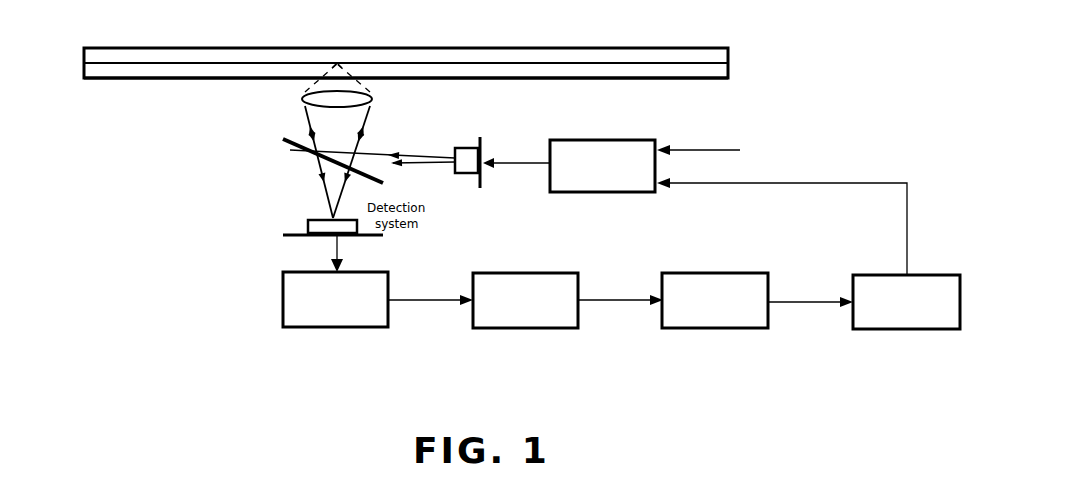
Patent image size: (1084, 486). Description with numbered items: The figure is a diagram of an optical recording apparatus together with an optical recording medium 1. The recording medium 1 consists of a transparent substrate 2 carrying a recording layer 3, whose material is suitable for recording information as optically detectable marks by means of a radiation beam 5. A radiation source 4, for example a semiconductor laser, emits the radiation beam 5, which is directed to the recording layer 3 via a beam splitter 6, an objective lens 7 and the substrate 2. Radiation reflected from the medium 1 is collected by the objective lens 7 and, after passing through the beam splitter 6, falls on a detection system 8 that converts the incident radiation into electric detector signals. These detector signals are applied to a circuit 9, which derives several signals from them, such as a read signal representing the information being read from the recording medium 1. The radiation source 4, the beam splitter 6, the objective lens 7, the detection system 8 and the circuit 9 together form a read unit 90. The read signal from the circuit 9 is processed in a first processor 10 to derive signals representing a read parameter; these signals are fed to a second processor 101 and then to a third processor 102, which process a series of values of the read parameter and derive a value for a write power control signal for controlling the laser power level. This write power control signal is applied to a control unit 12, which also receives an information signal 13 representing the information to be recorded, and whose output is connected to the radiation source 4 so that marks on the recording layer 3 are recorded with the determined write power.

The optical recording medium 1 is at (737, 31).
The transparent substrate 2 is at (706, 79).
The recording layer 3 is at (716, 66).
The radiation source 4 is at (466, 175).
The radiation beam 5 is at (412, 157).
The beam splitter 6 is at (296, 148).
The objective lens 7 is at (302, 99).
The detection system 8 is at (306, 228).
The circuit 9 is at (336, 329).
The first processor 10 is at (527, 330).
The control unit 12 is at (603, 194).
The information signal 13 is at (710, 148).
The read unit 90 is at (138, 206).
The second processor 101 is at (713, 330).
The third processor 102 is at (905, 331).